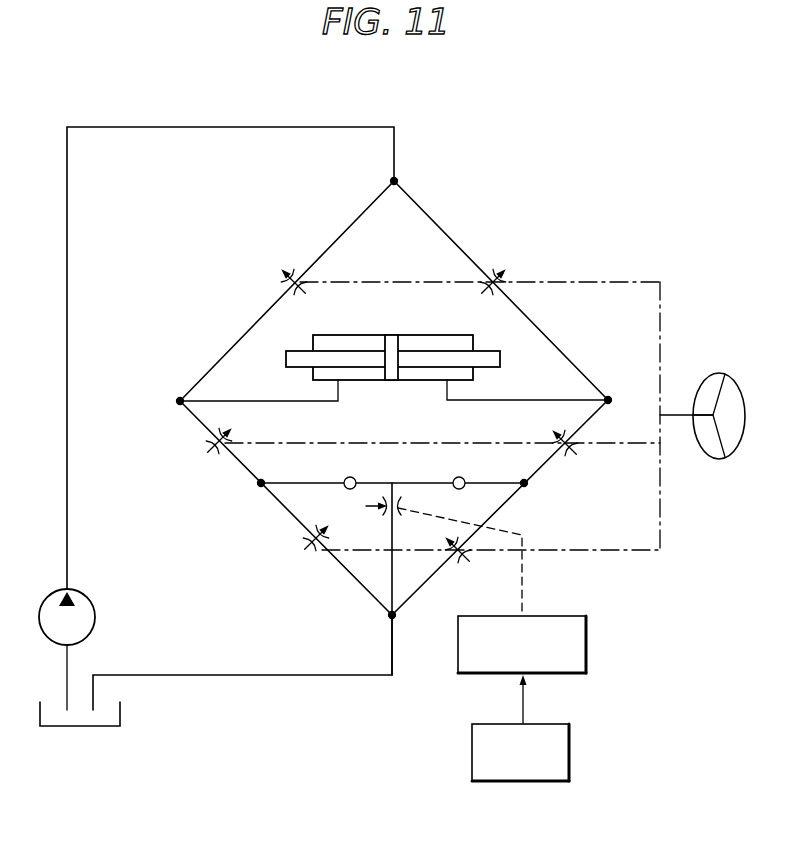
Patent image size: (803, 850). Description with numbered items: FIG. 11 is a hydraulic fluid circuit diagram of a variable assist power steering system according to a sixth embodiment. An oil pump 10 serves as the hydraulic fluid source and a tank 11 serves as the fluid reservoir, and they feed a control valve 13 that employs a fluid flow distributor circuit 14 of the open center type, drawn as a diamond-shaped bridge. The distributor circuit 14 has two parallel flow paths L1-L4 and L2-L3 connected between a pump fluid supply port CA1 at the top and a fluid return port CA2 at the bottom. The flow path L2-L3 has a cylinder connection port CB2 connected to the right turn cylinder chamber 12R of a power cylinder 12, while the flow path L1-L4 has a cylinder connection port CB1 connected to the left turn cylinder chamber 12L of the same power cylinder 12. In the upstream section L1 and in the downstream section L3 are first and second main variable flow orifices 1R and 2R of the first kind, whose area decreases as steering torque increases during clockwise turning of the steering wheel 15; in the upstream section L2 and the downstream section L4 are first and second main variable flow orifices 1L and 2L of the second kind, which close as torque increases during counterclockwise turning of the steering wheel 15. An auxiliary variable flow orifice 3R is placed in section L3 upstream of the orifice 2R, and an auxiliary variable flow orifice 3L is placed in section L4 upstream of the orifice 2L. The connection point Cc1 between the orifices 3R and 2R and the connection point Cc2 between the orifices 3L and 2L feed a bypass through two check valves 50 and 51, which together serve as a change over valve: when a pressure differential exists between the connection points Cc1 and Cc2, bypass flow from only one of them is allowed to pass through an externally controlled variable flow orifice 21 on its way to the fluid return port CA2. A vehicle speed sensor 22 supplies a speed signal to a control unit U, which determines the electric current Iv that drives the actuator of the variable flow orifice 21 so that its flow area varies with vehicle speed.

The oil pump 10 is at (96, 620).
The tank 11 is at (120, 718).
The power cylinder 12 is at (394, 340).
The left turn cylinder chamber 12L is at (338, 340).
The right turn cylinder chamber 12R is at (437, 340).
The control valve 13 is at (394, 379).
The fluid flow distributor circuit 14 is at (501, 290).
The steering wheel 15 is at (712, 461).
The externally controlled variable flow orifice 21 is at (380, 515).
The vehicle speed sensor 22 is at (570, 758).
The check valve 50 is at (345, 479).
The check valve 51 is at (462, 478).
The first main variable flow orifice of the first kind 1R is at (296, 272).
The first main variable flow orifice of the second kind 1L is at (490, 273).
The second main variable flow orifice of the first kind 2R is at (457, 562).
The second main variable flow orifice of the second kind 2L is at (318, 557).
The auxiliary variable flow orifice of the first kind 3R is at (566, 458).
The auxiliary variable flow orifice of the second kind 3L is at (222, 456).
The upstream section L1 is at (340, 234).
The upstream section L2 is at (555, 343).
The downstream section L3 is at (503, 506).
The downstream section L4 is at (292, 520).
The pump fluid supply port CA1 is at (400, 177).
The fluid return port CA2 is at (395, 622).
The cylinder connection port CB1 is at (178, 397).
The cylinder connection port CB2 is at (610, 395).
The connection point Cc1 is at (530, 488).
The connection point Cc2 is at (259, 488).
The control unit U is at (587, 643).
The electric current Iv is at (473, 561).